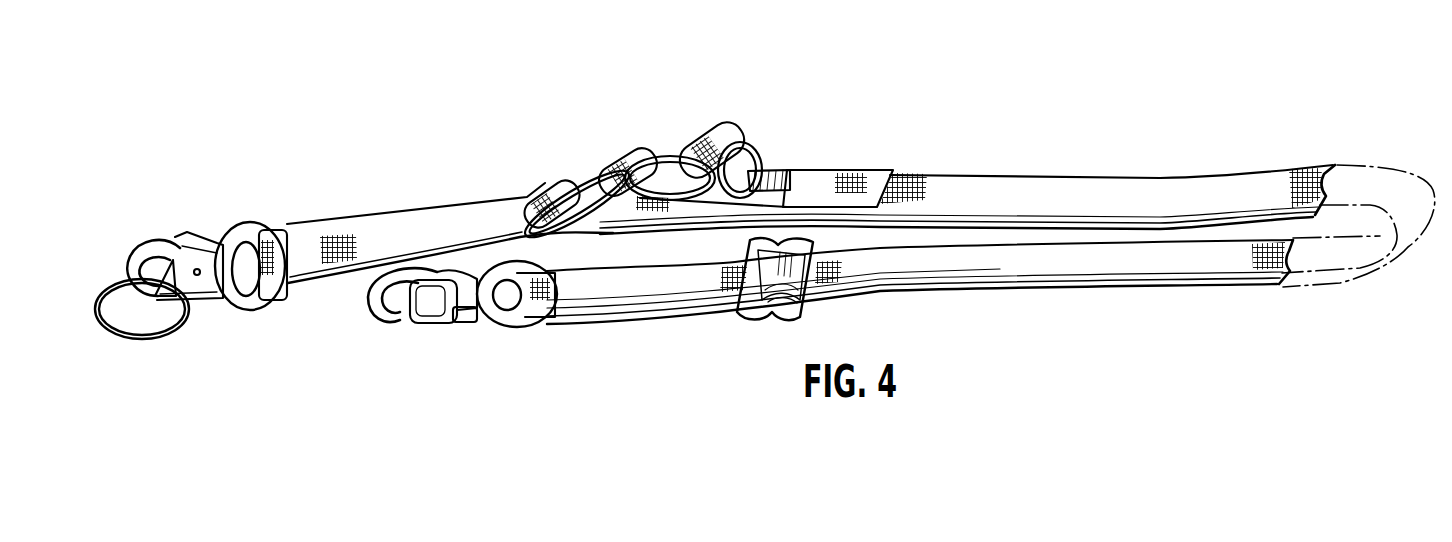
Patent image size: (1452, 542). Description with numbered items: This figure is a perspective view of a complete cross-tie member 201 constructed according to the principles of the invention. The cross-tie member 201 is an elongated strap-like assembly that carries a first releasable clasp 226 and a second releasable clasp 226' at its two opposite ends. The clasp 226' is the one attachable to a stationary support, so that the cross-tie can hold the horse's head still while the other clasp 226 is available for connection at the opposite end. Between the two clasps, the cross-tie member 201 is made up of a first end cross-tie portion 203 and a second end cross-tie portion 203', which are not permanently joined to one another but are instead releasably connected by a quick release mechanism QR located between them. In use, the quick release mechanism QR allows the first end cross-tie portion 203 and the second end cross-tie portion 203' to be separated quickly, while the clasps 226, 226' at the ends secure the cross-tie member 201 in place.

The cross-tie member 201 is at (1087, 150).
The first end cross-tie portion 203 is at (450, 213).
The second end cross-tie portion 203' is at (851, 165).
The quick release mechanism QR is at (715, 120).
The first releasable clasp 226 is at (191, 256).
The second releasable clasp 226' is at (462, 323).